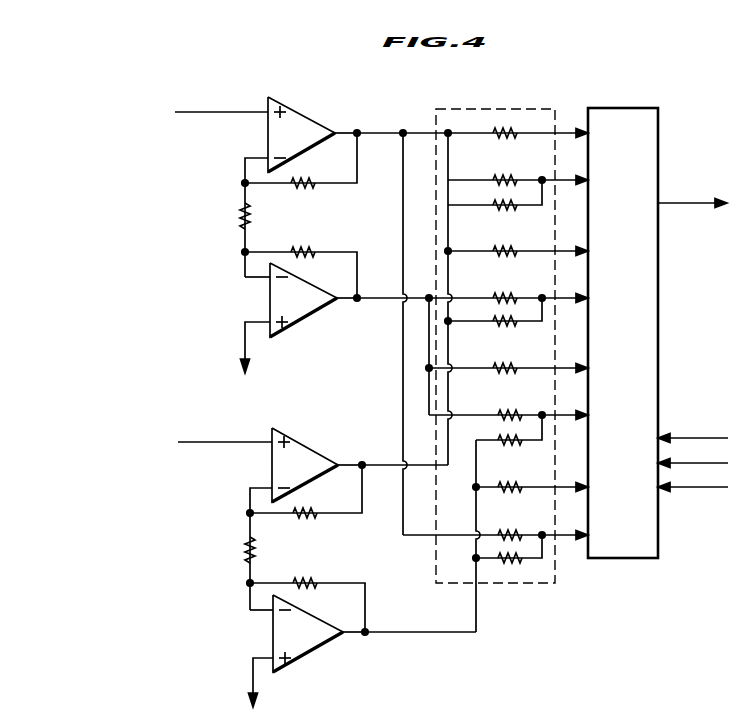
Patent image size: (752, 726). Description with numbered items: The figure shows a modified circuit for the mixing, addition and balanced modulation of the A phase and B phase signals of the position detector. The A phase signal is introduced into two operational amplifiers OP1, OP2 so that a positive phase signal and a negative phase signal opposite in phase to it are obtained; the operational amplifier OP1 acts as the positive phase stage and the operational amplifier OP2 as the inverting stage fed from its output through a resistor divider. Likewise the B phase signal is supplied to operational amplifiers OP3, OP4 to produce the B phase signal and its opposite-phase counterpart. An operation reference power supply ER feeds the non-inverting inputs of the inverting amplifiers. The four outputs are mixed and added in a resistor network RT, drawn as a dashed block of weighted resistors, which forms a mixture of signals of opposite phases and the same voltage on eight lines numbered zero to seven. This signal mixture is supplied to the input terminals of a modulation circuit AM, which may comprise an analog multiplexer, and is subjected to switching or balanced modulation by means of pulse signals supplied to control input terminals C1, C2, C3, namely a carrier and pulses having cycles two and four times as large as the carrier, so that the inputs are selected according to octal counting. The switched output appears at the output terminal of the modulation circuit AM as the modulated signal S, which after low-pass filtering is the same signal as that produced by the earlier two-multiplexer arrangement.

The operational amplifier OP1 is at (303, 122).
The operational amplifier OP2 is at (315, 307).
The operational amplifier OP3 is at (320, 460).
The operational amplifier OP4 is at (318, 638).
The resistor network RT is at (492, 109).
The modulation circuit AM is at (620, 115).
The operation reference power supply ER is at (262, 514).
The modulated signal S is at (692, 196).
The input terminal C1 is at (679, 438).
The input terminal C2 is at (679, 463).
The input terminal C3 is at (679, 487).